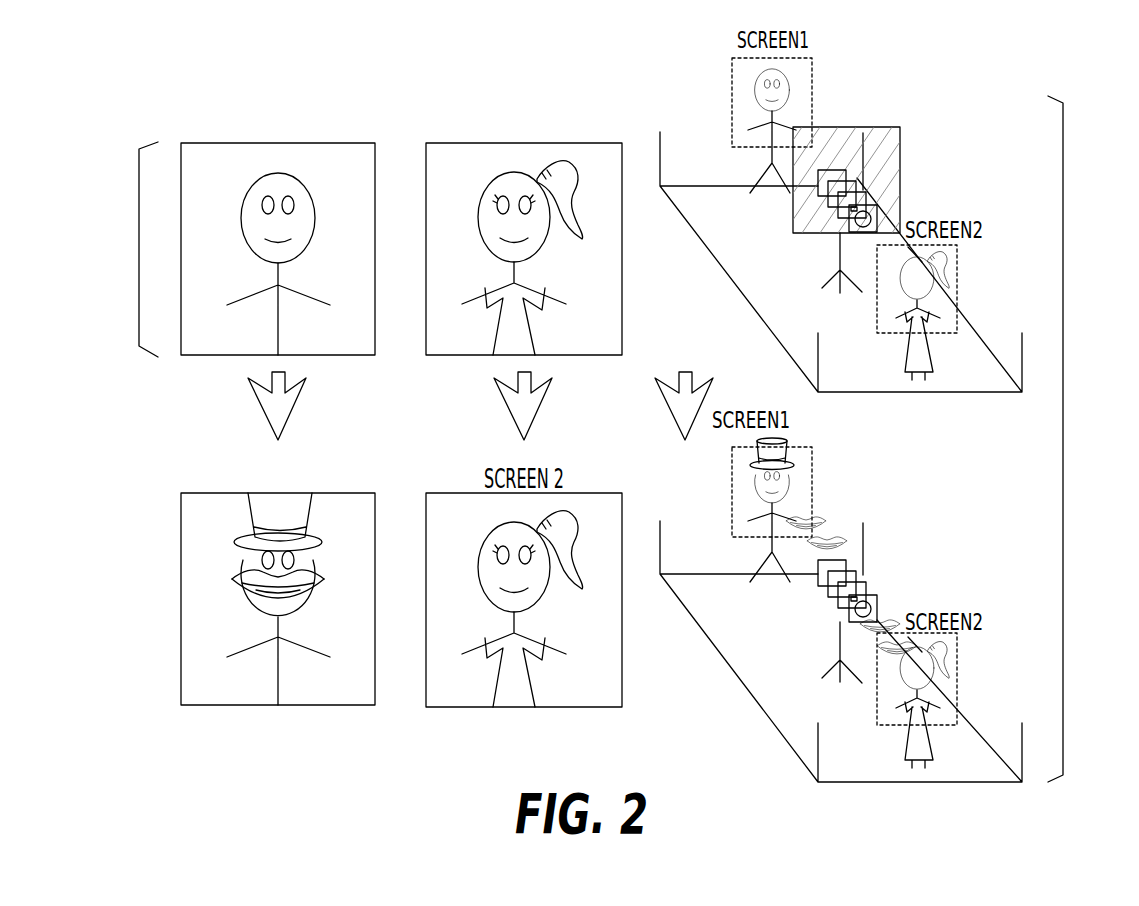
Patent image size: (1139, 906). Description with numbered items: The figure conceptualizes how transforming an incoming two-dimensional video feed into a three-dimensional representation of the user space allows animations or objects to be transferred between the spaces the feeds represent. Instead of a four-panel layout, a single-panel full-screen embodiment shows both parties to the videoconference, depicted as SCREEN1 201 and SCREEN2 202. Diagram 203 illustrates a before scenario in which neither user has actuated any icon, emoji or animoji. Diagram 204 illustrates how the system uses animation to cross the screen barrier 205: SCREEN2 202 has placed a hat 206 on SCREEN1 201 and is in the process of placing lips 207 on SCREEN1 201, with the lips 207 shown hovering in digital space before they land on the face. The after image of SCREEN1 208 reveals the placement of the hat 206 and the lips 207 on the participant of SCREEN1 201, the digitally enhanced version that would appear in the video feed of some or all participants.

The SCREEN1 201 is at (332, 143).
The SCREEN2 202 is at (582, 143).
The diagram 203 is at (139, 245).
The diagram 204 is at (1063, 438).
The screen barrier 205 is at (900, 158).
The hat 206 is at (797, 455).
The lips 207 is at (826, 519).
The after image of SCREEN1 208 is at (335, 705).